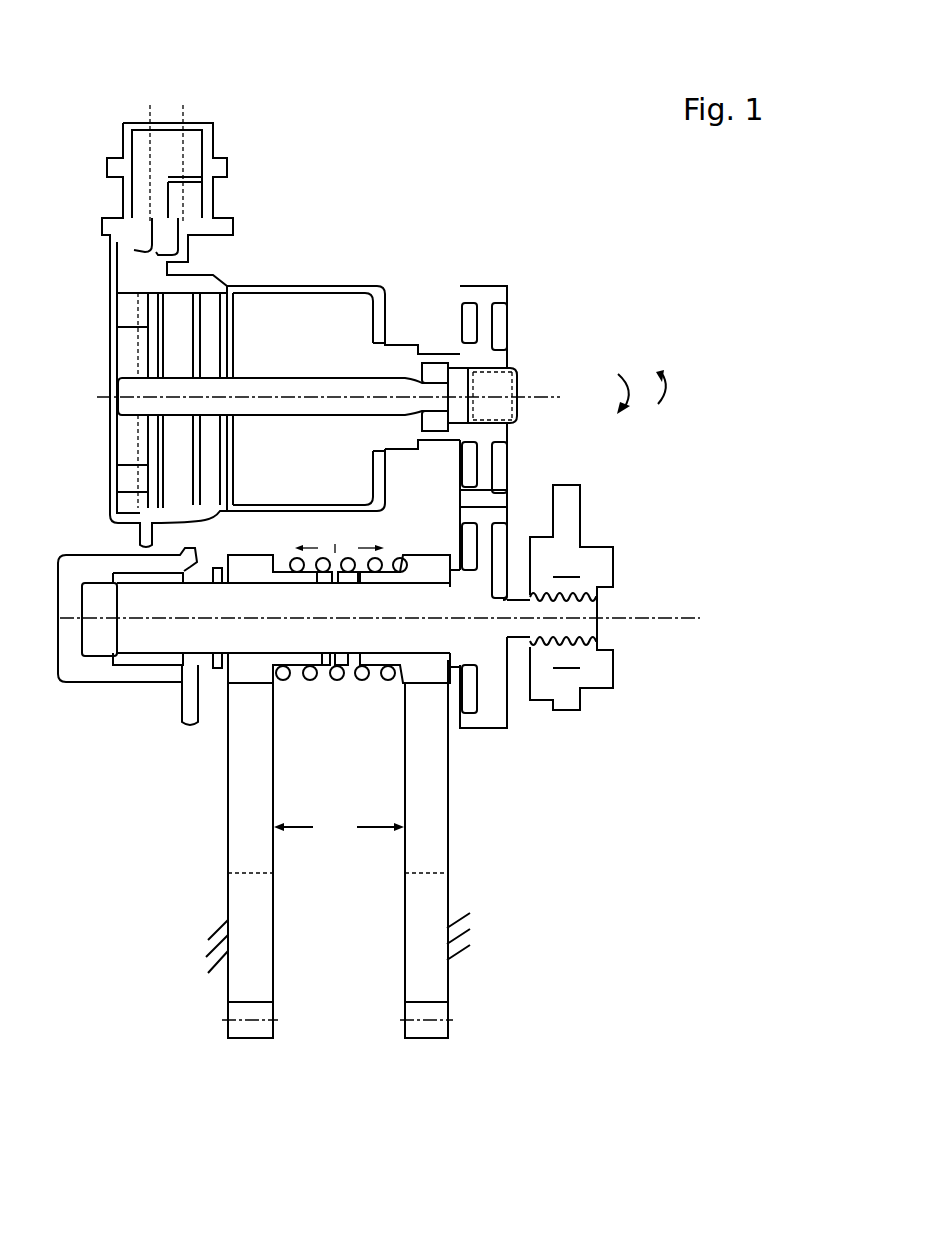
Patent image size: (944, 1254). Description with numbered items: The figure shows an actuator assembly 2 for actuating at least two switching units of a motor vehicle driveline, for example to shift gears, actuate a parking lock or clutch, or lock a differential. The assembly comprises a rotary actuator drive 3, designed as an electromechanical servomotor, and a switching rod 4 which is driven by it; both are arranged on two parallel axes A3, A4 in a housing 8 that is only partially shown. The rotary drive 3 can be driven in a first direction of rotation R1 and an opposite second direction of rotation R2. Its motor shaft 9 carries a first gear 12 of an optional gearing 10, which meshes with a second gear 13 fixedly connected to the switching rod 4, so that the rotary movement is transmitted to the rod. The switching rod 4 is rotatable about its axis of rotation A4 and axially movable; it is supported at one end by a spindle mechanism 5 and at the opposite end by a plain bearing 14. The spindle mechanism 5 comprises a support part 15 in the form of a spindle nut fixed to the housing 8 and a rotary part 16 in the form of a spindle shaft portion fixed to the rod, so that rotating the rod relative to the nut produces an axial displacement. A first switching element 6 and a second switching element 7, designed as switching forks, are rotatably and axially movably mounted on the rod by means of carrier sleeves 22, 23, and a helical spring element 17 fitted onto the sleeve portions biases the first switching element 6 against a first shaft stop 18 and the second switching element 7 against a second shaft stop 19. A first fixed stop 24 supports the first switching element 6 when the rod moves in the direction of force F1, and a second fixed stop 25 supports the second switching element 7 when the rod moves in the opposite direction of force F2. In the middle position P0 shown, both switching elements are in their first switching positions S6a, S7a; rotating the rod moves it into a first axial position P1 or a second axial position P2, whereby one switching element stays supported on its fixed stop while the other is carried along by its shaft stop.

The actuator assembly 2 is at (327, 114).
The actuator drive 3 is at (272, 272).
The switching rod 4 is at (198, 647).
The spindle mechanism 5 is at (586, 572).
The first switching element 6 is at (440, 857).
The second switching element 7 is at (231, 828).
The housing 8 is at (78, 568).
The motor shaft 9 is at (326, 385).
The gearing 10 is at (516, 264).
The first gear 12 is at (478, 292).
The second gear 13 is at (501, 720).
The plain bearing 14 is at (136, 662).
The support part 15 is at (580, 665).
The rotary part 16 is at (570, 607).
The spring element 17 is at (338, 683).
The first shaft stop 18 is at (440, 665).
The second shaft stop 19 is at (230, 668).
The carrier sleeve 22 is at (413, 670).
The carrier sleeve 23 is at (262, 666).
The first fixed stop 24 is at (442, 958).
The second fixed stop 25 is at (232, 945).
The axis of the rotary drive A3 is at (532, 388).
The axis of rotation of the switching rod A4 is at (590, 620).
The first direction of rotation R1 is at (631, 423).
The second direction of rotation R2 is at (674, 360).
The direction of force F1 is at (380, 815).
The direction of force F2 is at (297, 815).
The middle position P0 is at (335, 537).
The first axial position P1 is at (371, 536).
The second axial position P2 is at (305, 536).
The first switching position S6a is at (433, 1064).
The first switching position S7a is at (248, 1064).